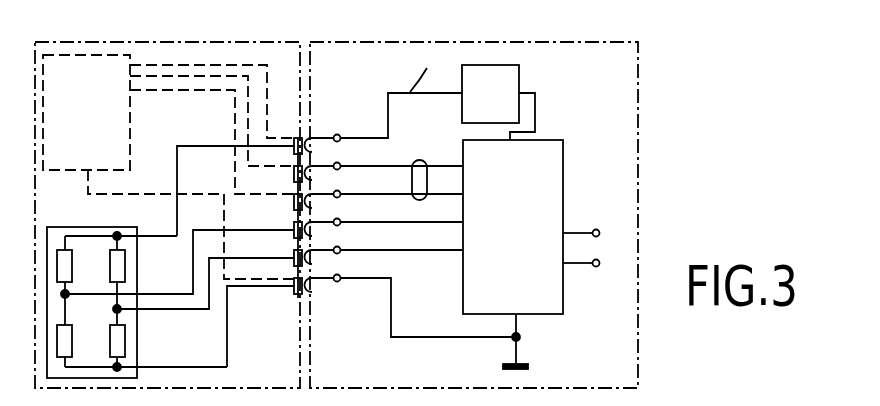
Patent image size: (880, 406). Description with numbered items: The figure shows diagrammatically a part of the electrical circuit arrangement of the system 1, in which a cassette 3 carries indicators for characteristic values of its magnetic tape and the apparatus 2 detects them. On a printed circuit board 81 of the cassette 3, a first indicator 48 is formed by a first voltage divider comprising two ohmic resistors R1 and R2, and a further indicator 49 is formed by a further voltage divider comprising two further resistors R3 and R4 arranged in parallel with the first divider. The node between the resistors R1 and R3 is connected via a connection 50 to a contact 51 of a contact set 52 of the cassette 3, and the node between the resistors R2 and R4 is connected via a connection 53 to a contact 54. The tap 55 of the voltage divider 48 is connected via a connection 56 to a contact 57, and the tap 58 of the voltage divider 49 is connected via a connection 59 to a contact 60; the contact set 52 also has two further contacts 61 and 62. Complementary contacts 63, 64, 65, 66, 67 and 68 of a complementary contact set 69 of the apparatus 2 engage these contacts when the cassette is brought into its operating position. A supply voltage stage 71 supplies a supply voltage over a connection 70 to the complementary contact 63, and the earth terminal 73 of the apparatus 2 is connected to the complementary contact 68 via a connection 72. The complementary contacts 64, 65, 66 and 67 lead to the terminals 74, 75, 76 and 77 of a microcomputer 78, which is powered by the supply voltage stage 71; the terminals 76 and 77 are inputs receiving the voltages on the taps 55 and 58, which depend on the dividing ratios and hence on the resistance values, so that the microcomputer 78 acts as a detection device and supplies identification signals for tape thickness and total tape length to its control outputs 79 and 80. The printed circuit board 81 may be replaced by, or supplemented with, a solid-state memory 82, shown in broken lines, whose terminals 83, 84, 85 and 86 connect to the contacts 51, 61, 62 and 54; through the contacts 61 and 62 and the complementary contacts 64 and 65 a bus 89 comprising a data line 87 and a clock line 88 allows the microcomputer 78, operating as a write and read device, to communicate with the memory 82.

The system 1 is at (306, 34).
The apparatus 2 is at (545, 42).
The cassette 3 is at (197, 42).
The first indicator 48 is at (135, 277).
The further indicator 49 is at (133, 253).
The connection 50 is at (205, 146).
The contact 51 is at (293, 139).
The contact set 52 is at (274, 235).
The connection 53 is at (227, 313).
The contact 54 is at (293, 291).
The tap 55 is at (66, 296).
The connection 56 is at (210, 229).
The contact 57 is at (293, 226).
The tap 58 is at (120, 311).
The connection 59 is at (209, 300).
The contact 60 is at (293, 254).
The further contact 61 is at (293, 170).
The further contact 62 is at (293, 198).
The complementary contact 63 is at (312, 152).
The complementary contact 64 is at (312, 180).
The complementary contact 65 is at (312, 208).
The complementary contact 66 is at (312, 236).
The complementary contact 67 is at (312, 264).
The complementary contact 68 is at (338, 292).
The complementary contact set 69 is at (338, 255).
The connection 70 is at (386, 111).
The supply voltage stage 71 is at (513, 80).
The connection 72 is at (392, 297).
The earth terminal 73 is at (517, 356).
The terminal 74 is at (463, 165).
The terminal 75 is at (463, 193).
The terminal 76 is at (463, 223).
The terminal 77 is at (463, 251).
The microcomputer 78 is at (547, 157).
The control output 79 is at (597, 229).
The control output 80 is at (597, 267).
The printed circuit board 81 is at (87, 229).
The solid-state memory 82 is at (130, 152).
The terminal 83 is at (130, 65).
The terminal 84 is at (130, 78).
The terminal 85 is at (130, 92).
The terminal 86 is at (88, 168).
The data line 87 is at (422, 153).
The clock line 88 is at (426, 200).
The bus 89 is at (423, 162).
The resistor R1 is at (73, 253).
The resistor R2 is at (73, 350).
The resistor R3 is at (125, 272).
The resistor R4 is at (125, 348).